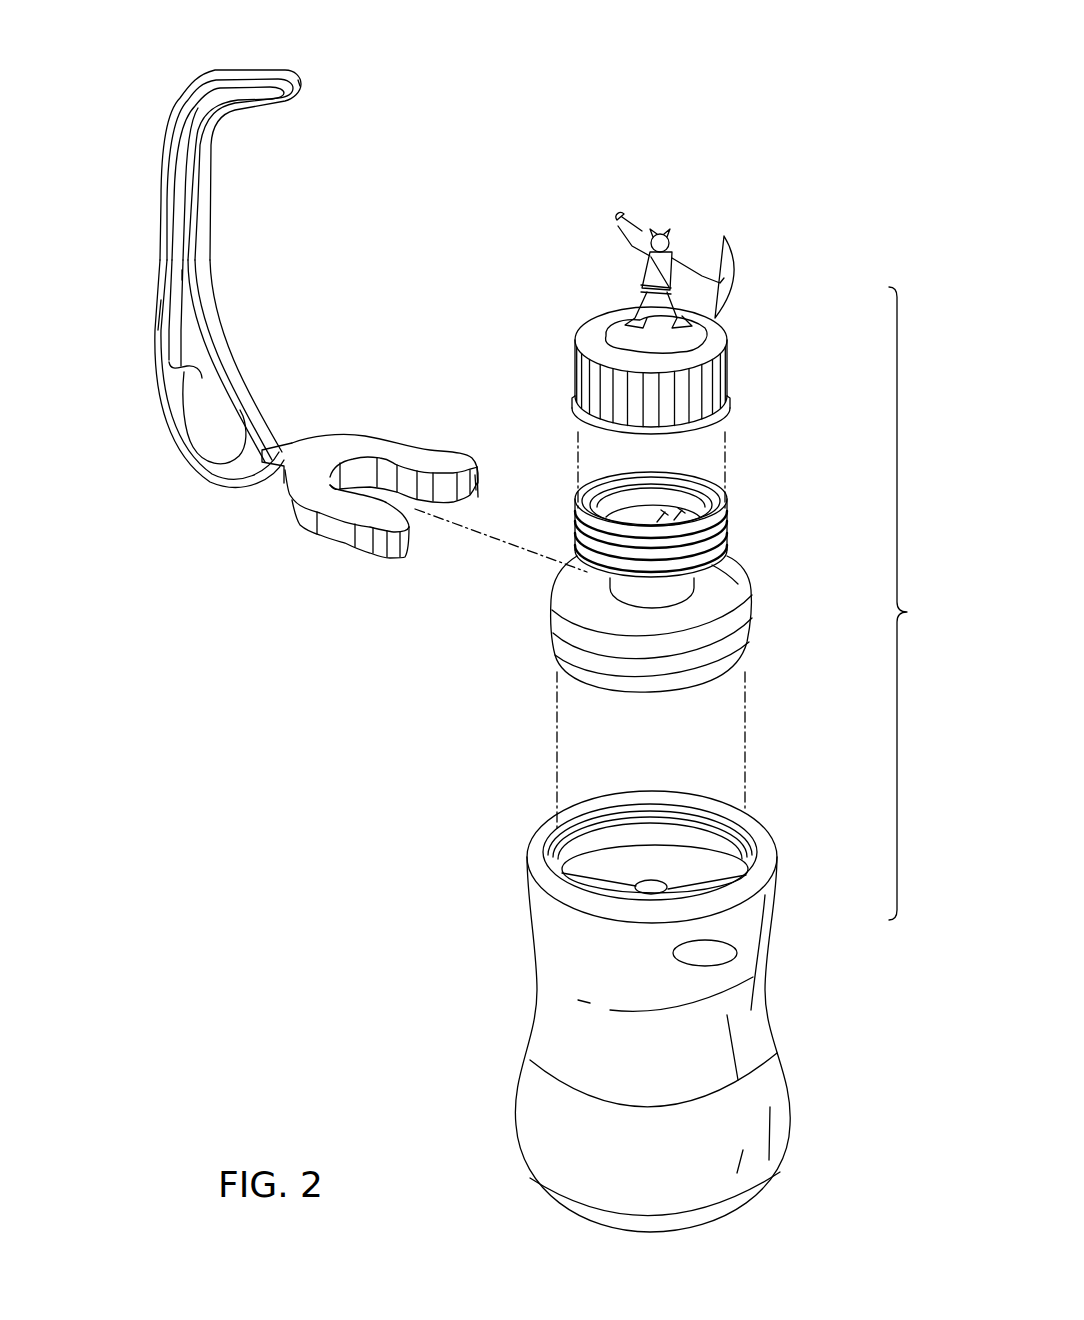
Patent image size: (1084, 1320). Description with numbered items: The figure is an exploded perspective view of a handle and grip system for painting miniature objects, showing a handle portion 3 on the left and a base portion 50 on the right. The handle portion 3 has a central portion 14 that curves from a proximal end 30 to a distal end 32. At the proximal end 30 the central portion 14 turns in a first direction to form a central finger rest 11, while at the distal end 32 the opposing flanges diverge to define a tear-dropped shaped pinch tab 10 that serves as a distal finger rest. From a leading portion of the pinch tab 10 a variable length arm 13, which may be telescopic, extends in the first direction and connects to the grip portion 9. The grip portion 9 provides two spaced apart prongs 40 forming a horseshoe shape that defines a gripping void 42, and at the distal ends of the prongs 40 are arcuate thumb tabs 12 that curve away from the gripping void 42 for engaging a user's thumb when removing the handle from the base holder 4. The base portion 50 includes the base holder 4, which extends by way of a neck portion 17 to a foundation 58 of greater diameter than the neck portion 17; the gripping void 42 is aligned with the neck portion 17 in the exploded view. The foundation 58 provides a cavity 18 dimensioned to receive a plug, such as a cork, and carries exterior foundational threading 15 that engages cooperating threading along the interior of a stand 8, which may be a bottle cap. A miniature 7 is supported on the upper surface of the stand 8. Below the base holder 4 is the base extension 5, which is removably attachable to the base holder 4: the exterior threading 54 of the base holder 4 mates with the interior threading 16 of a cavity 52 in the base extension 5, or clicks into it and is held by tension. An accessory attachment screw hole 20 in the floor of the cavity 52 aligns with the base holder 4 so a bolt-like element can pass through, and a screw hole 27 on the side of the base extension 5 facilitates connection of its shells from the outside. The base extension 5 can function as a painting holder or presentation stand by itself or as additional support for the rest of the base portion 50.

The handle portion 3 is at (179, 273).
The base holder 4 is at (647, 624).
The base extension 5 is at (677, 980).
The miniature 7 is at (660, 226).
The stand 8 is at (623, 304).
The grip portion 9 is at (430, 494).
The pinch tab 10 is at (208, 423).
The central finger rest 11 is at (245, 76).
The arcuate thumb tabs 12 is at (470, 486).
The variable length arm 13 is at (278, 478).
The central portion 14 is at (183, 275).
The exterior foundational threading 15 is at (691, 505).
The interior threading 16 is at (567, 830).
The neck portion 17 is at (627, 598).
The cavity 18 is at (665, 490).
The accessory attachment screw hole 20 is at (655, 884).
The screw hole 27 is at (718, 950).
The proximal end 30 is at (199, 82).
The distal end 32 is at (188, 371).
The prongs 40 is at (393, 447).
The gripping void 42 is at (414, 510).
The base portion 50 is at (930, 603).
The cavity 52 is at (712, 883).
The exterior threading 54 is at (753, 612).
The foundation 58 is at (718, 562).